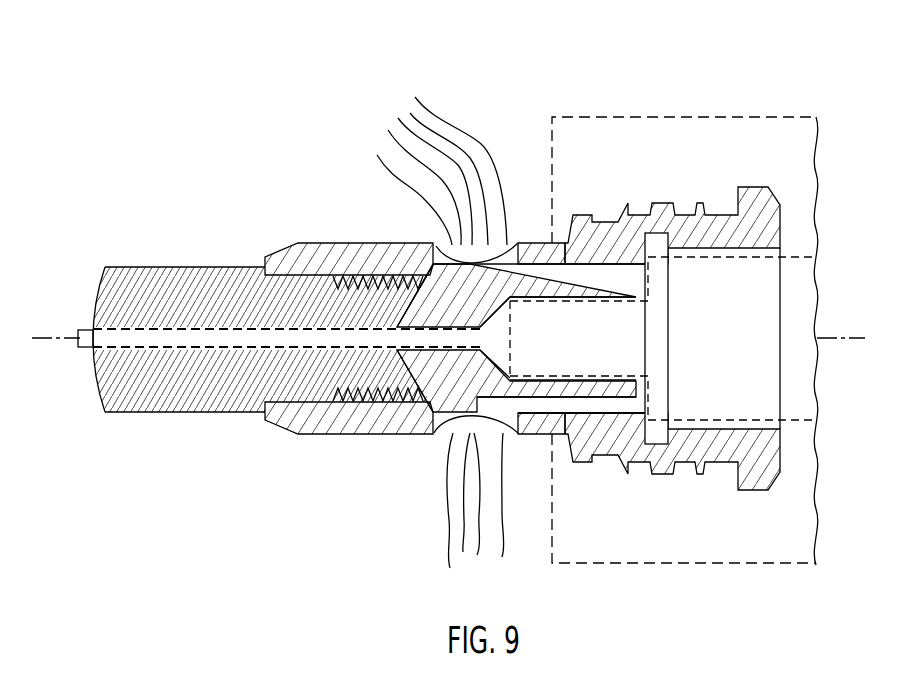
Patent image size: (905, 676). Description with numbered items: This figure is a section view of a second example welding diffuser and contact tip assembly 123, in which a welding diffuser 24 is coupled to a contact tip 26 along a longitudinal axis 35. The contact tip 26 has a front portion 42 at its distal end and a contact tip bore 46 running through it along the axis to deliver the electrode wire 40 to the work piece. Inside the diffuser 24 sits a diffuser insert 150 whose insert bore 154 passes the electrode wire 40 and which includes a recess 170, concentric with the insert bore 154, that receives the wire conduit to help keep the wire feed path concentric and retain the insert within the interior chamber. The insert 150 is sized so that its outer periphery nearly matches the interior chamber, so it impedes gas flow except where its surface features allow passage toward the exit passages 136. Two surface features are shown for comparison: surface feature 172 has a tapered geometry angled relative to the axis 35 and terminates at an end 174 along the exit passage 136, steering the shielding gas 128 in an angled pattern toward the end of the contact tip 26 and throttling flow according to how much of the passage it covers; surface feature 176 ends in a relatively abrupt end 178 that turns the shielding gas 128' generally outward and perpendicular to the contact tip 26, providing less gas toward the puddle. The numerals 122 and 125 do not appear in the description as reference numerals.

The welding diffuser 24 is at (287, 418).
The contact tip 26 is at (121, 400).
The longitudinal axis 35 is at (56, 338).
The electrode wire 40 is at (92, 352).
The front portion 42 is at (262, 305).
The contact tip bore 46 is at (89, 325).
The wall 122 is at (731, 117).
The welding diffuser and contact tip assembly 123 is at (430, 308).
The flange 125 is at (622, 382).
The shielding gas 128 is at (442, 129).
The shielding gas 128' is at (434, 518).
The exit passages 136 is at (517, 241).
The diffuser insert 150 is at (516, 316).
The insert bore 154 is at (432, 358).
The recess 170 is at (623, 304).
The surface feature 172 is at (566, 279).
The end 174 is at (478, 245).
The surface feature 176 is at (583, 404).
The end 178 is at (479, 428).